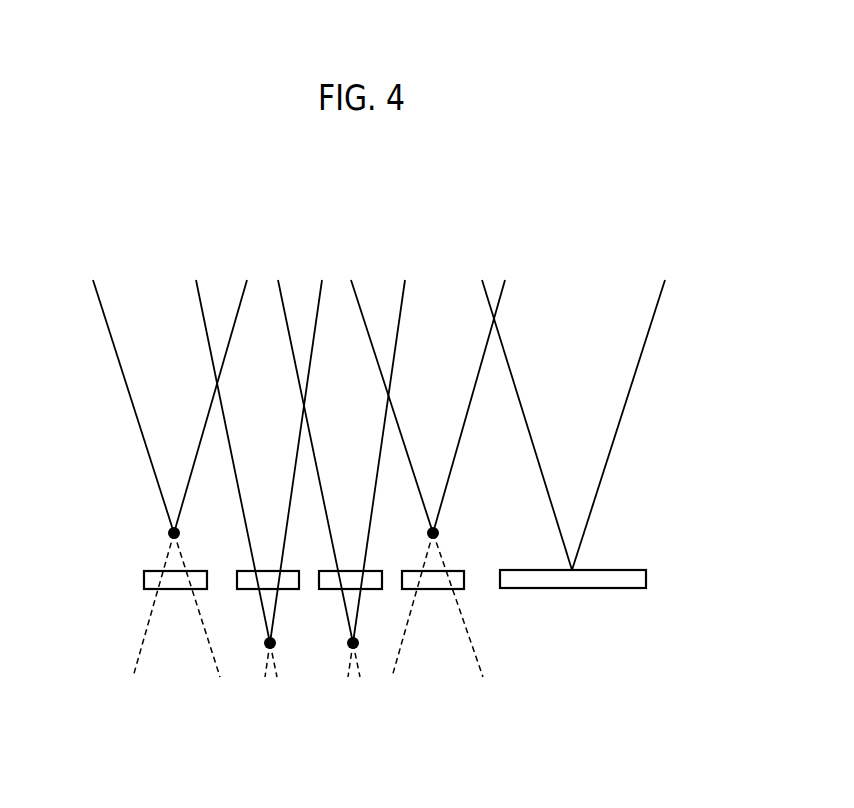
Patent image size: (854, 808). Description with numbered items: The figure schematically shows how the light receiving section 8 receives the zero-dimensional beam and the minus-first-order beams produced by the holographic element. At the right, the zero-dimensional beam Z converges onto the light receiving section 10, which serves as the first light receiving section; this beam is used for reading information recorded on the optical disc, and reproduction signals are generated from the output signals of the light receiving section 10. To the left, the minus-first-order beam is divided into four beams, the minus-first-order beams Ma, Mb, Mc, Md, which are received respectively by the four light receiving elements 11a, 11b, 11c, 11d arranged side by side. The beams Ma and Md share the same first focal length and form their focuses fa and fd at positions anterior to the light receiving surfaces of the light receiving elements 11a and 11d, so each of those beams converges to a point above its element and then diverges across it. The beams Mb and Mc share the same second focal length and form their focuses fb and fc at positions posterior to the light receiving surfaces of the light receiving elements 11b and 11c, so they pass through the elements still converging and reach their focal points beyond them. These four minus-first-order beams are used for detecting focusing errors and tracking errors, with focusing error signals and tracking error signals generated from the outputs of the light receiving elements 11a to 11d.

The light receiving section 8 is at (75, 646).
The light receiving section 10 is at (622, 570).
The light receiving element 11a is at (405, 570).
The light receiving element 11b is at (321, 570).
The light receiving element 11c is at (239, 570).
The light receiving element 11d is at (145, 570).
The focus fa is at (445, 528).
The focus fb is at (366, 641).
The focus fc is at (256, 641).
The focus fd is at (161, 527).
The −1 dimensional beam Ma is at (458, 452).
The −1 dimensional beam Mb is at (395, 352).
The −1 dimensional beam Mc is at (208, 346).
The −1 dimensional beam Md is at (148, 452).
The zero-dimensional beam Z is at (643, 357).